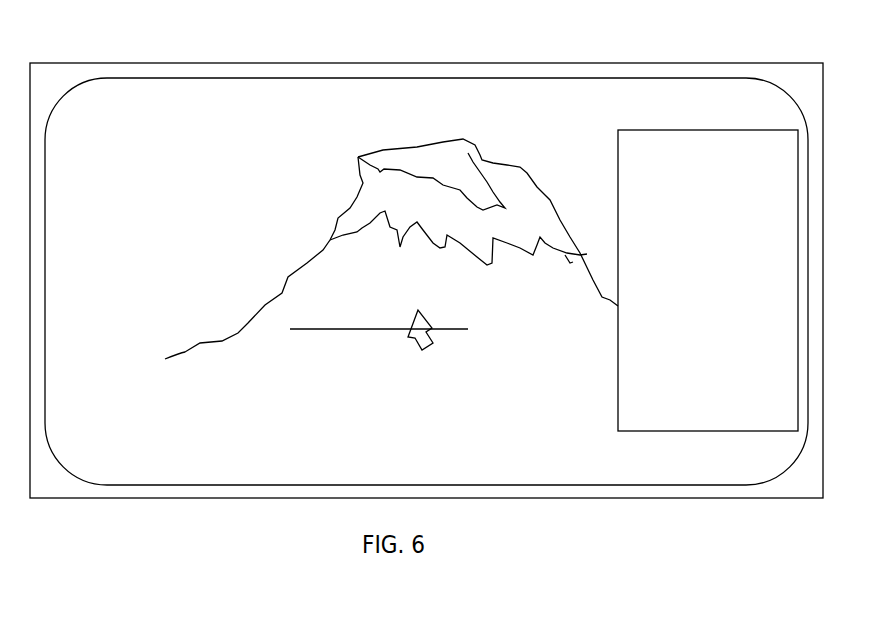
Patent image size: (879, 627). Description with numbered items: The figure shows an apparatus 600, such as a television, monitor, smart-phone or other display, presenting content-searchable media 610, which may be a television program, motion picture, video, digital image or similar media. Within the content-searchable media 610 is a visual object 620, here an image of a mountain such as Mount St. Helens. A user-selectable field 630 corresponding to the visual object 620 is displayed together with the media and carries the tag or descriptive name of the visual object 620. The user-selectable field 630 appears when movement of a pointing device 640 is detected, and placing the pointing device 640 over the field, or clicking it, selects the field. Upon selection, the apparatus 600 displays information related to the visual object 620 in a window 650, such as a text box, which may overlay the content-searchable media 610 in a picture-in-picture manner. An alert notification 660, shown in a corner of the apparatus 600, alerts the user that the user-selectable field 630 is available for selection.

The apparatus 600 is at (399, 62).
The content-searchable media 610 is at (133, 133).
The visual object 620 is at (483, 157).
The user-selectable field 630 is at (337, 300).
The pointing device 640 is at (420, 350).
The window 650 is at (618, 385).
The alert notification 660 is at (138, 443).